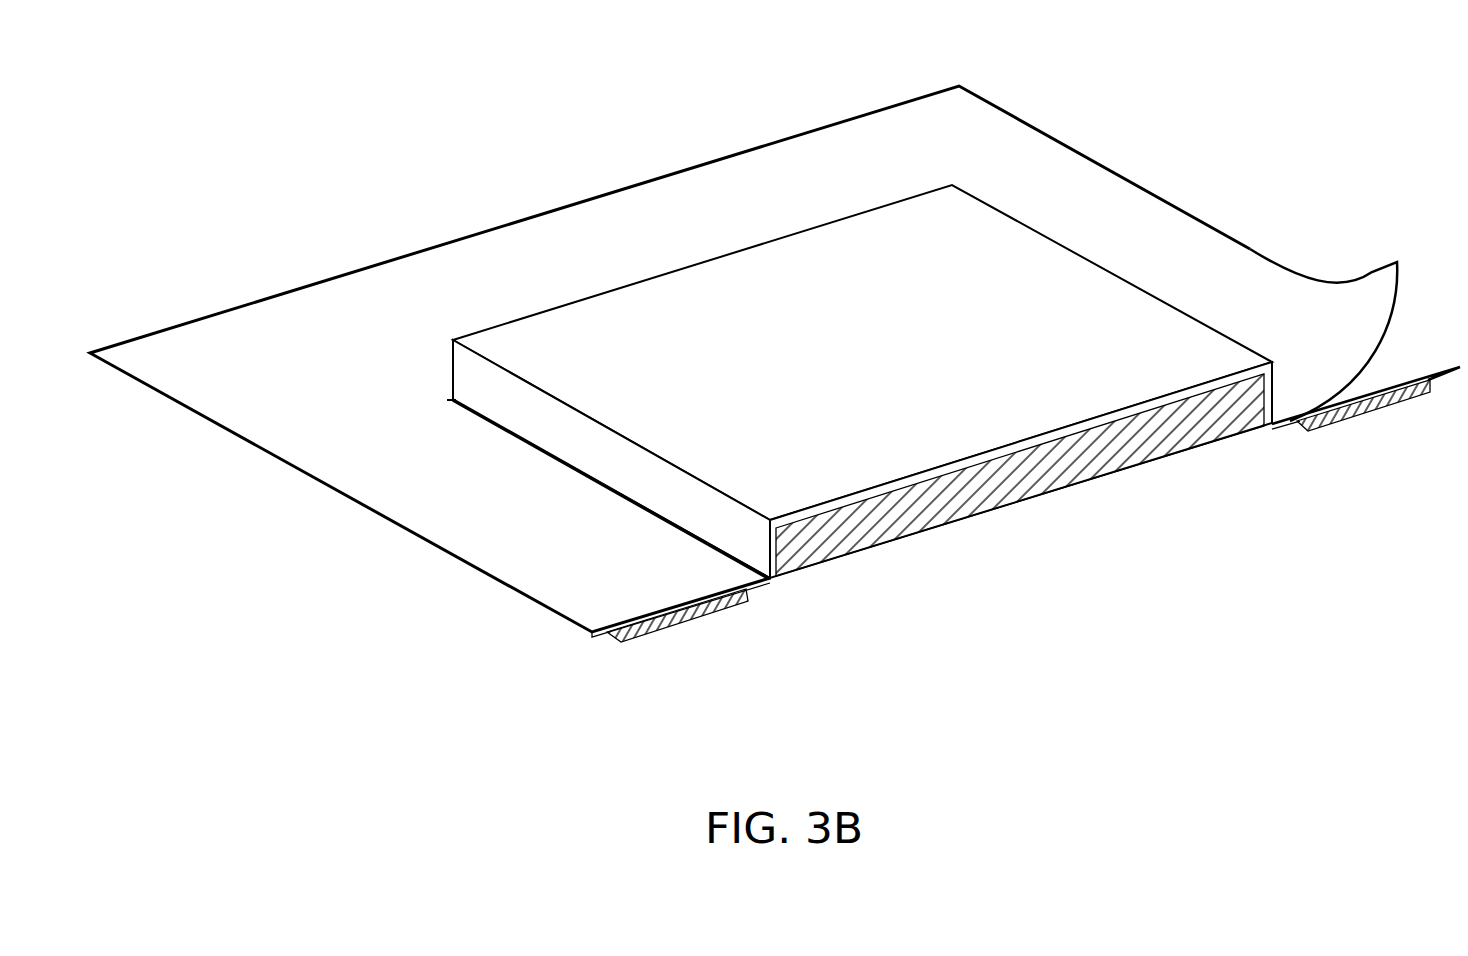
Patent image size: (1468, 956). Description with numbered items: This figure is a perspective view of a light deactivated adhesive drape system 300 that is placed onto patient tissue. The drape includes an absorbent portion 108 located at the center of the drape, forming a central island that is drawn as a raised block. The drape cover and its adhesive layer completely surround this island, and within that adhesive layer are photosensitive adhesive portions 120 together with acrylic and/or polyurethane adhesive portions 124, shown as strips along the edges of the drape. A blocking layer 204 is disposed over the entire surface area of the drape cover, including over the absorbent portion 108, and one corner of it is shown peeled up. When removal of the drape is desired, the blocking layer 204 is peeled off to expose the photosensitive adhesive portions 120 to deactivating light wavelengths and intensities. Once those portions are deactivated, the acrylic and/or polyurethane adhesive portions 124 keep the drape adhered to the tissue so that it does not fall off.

The light deactivated adhesive drape system 300 is at (270, 69).
The blocking layer 204 is at (1068, 169).
The absorbent portion 108 is at (1002, 508).
The photosensitive adhesive portions 120 is at (718, 624).
The acrylic and/or polyurethane adhesive portions 124 is at (768, 594).